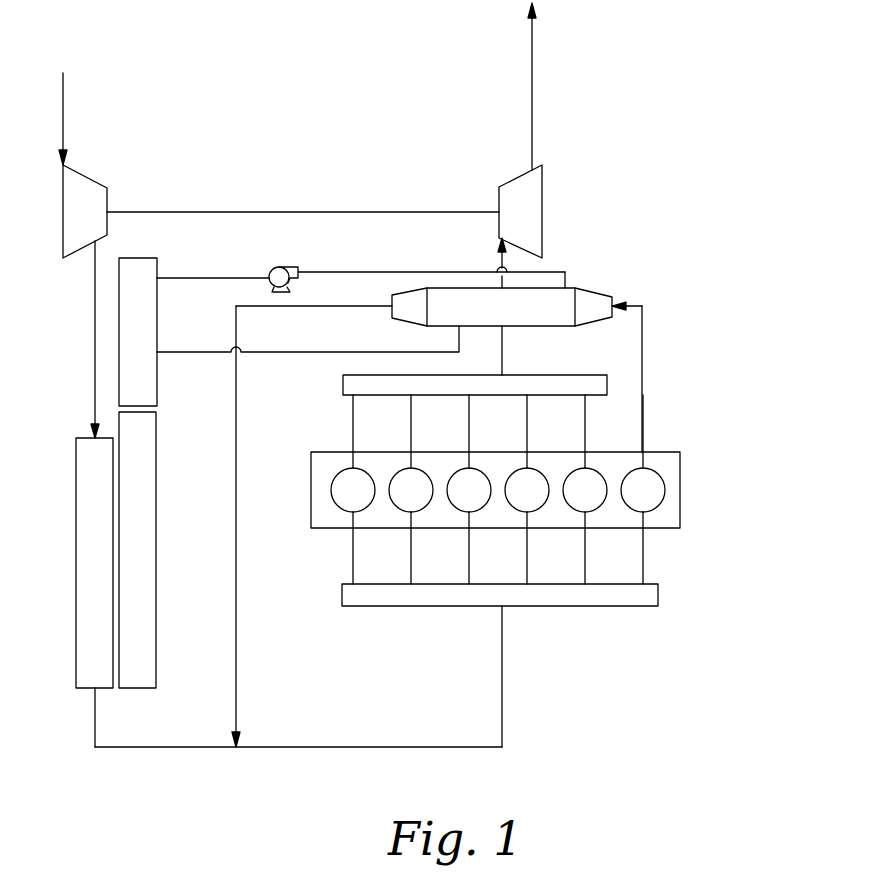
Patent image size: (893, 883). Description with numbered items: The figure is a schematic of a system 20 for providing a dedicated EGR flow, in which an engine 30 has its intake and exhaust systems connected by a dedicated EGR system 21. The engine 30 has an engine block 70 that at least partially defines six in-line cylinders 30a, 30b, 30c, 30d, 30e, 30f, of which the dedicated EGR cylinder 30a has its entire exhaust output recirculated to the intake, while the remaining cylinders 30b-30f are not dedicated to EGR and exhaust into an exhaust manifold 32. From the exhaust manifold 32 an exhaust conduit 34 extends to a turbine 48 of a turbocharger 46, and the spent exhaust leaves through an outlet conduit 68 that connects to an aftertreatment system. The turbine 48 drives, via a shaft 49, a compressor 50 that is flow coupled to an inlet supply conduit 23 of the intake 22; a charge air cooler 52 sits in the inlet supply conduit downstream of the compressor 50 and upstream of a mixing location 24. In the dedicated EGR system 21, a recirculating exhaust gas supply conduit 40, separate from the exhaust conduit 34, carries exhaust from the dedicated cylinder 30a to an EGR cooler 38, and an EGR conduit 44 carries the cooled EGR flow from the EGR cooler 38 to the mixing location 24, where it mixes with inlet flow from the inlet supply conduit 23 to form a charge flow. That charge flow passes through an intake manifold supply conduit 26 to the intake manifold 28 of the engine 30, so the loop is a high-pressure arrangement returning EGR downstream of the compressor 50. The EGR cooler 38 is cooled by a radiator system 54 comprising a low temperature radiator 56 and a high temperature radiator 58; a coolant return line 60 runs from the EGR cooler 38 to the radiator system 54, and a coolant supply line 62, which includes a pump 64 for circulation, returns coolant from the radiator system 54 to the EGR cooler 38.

The system 20 is at (618, 681).
The dedicated EGR system 21 is at (782, 316).
The intake 22 is at (112, 757).
The inlet supply conduit 23 is at (160, 748).
The mixing location 24 is at (236, 748).
The intake manifold supply conduit 26 is at (502, 690).
The intake manifold 28 is at (600, 607).
The engine 30 is at (311, 487).
The dedicated EGR cylinder 30a is at (634, 497).
The cylinder 30b is at (570, 485).
The cylinder 30c is at (518, 500).
The cylinder 30d is at (460, 484).
The cylinder 30e is at (405, 498).
The cylinder 30f is at (364, 483).
The exhaust manifold 32 is at (598, 374).
The exhaust conduit 34 is at (503, 360).
The EGR cooler 38 is at (596, 288).
The recirculating exhaust gas supply conduit 40 is at (642, 352).
The EGR conduit 44 is at (236, 595).
The turbocharger 46 is at (275, 180).
The turbine 48 is at (532, 222).
The shaft 49 is at (183, 212).
The compressor 50 is at (96, 223).
The charge air cooler 52 is at (76, 560).
The radiator system 54 is at (163, 428).
The low temperature radiator 56 is at (157, 333).
The high temperature radiator 58 is at (157, 540).
The coolant return line 60 is at (285, 355).
The coolant supply line 62 is at (187, 278).
The pump 64 is at (285, 265).
The outlet conduit 68 is at (532, 66).
The engine block 70 is at (662, 452).